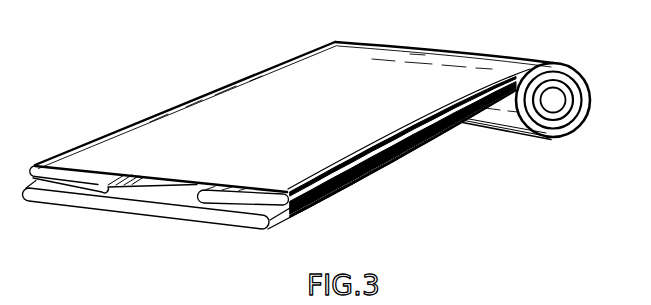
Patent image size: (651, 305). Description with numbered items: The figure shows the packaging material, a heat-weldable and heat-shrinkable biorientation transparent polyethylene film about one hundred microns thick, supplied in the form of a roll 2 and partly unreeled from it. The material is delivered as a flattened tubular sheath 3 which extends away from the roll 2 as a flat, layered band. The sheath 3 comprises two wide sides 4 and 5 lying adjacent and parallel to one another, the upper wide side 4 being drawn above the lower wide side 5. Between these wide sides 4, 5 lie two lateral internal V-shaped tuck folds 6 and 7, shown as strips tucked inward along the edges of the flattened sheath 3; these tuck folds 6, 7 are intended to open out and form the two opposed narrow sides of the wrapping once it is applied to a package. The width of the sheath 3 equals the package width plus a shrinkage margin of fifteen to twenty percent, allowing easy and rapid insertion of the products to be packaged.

The roll 2 is at (558, 106).
The flattened tubular sheath 3 is at (319, 125).
The wide side 4 is at (105, 150).
The wide side 5 is at (128, 213).
The lateral internal V-shaped tuck fold 6 is at (125, 190).
The lateral internal V-shaped tuck fold 7 is at (200, 193).